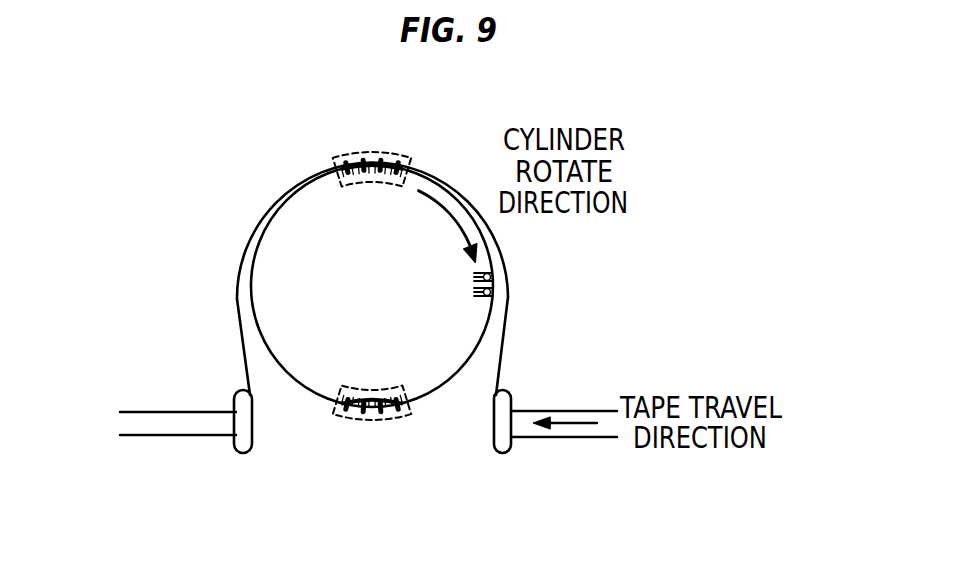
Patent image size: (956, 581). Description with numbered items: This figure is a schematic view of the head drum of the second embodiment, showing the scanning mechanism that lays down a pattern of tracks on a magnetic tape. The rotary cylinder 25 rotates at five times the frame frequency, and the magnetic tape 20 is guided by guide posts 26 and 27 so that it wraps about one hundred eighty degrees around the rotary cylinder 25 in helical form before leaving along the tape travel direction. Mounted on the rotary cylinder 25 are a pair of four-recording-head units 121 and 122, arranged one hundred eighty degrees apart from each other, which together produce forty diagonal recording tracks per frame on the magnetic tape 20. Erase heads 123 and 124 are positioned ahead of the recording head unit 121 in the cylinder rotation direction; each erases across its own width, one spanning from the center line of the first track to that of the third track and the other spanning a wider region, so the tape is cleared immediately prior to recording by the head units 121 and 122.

The magnetic tape 20 is at (240, 255).
The rotary cylinder 25 is at (254, 318).
The guide post 26 is at (232, 392).
The guide post 27 is at (502, 454).
The four-recording-head unit 121 is at (370, 160).
The four-recording-head unit 122 is at (375, 418).
The erase head 123 is at (492, 292).
The erase head 124 is at (492, 278).